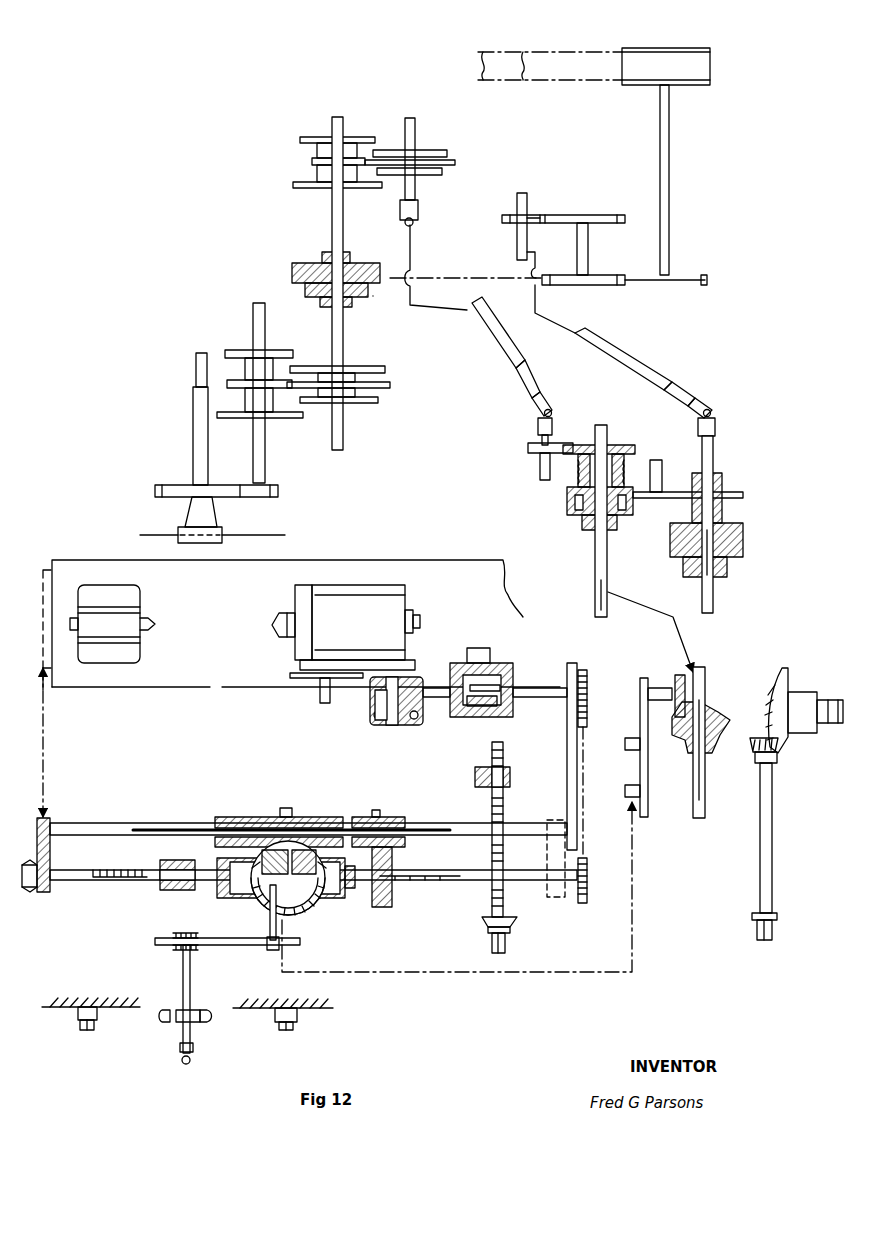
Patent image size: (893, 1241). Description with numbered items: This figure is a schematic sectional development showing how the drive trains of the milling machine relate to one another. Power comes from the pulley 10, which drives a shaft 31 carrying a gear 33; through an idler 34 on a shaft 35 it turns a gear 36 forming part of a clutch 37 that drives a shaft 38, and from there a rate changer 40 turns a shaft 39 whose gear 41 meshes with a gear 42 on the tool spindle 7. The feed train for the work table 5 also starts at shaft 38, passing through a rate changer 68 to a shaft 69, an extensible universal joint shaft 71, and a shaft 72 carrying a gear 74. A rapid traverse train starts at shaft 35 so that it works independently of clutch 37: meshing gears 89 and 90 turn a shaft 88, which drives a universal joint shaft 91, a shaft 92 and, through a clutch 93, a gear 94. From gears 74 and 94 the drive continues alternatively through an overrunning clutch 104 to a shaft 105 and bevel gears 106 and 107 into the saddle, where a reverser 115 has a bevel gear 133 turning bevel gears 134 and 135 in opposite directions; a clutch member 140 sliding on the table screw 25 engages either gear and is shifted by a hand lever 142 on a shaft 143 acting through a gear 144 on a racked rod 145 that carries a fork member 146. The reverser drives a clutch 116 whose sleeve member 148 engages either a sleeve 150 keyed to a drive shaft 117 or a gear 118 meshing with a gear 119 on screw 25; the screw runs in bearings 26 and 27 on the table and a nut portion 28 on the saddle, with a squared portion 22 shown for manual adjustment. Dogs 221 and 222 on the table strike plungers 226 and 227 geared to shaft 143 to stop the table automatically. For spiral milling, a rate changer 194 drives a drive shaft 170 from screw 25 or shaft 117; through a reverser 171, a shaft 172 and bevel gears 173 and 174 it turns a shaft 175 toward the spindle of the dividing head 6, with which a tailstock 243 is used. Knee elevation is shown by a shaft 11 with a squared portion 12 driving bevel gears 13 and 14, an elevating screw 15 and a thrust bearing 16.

The work table 5 is at (156, 683).
The dividing head 6 is at (372, 580).
The tool spindle 7 is at (193, 426).
The pulley 10 is at (645, 50).
The shaft 11 is at (492, 910).
The squared portion 12 is at (772, 918).
The bevel gear 13 is at (772, 765).
The bevel gear 14 is at (784, 668).
The elevating screw 15 is at (826, 700).
The thrust bearing 16 is at (805, 733).
The squared portion 22 is at (505, 940).
The table screw 25 is at (470, 880).
The bearing 26 is at (44, 893).
The bearing 27 is at (556, 897).
The nut portion 28 is at (185, 860).
The shaft 31 is at (669, 180).
The gear 33 is at (688, 285).
The idler 34 is at (605, 286).
The shaft 35 is at (589, 243).
The gear 36 is at (382, 290).
The clutch 37 is at (368, 295).
The shaft 38 is at (343, 343).
The shaft 39 is at (265, 312).
The rate changer 40 is at (302, 362).
The gear 41 is at (278, 492).
The gear 42 is at (228, 503).
The rate changer 68 is at (373, 190).
The shaft 69 is at (415, 185).
The extensible universal joint shaft 71 is at (508, 330).
The shaft 72 is at (552, 438).
The gear 74 is at (528, 446).
The shaft 88 is at (528, 194).
The gear 89 is at (574, 216).
The gear 90 is at (531, 216).
The extensible universal joint shaft 91 is at (650, 364).
The shaft 92 is at (714, 449).
The clutch 93 is at (755, 535).
The gear 94 is at (743, 494).
The overrunning clutch 104 is at (565, 505).
The shaft 105 is at (596, 552).
The bevel gear 106 is at (708, 702).
The bevel gear 107 is at (680, 676).
The reverser 115 is at (346, 893).
The clutch 116 is at (340, 815).
The drive shaft 117 is at (445, 828).
The gear 118 is at (380, 813).
The gear 119 is at (392, 858).
The bevel gear 133 is at (300, 915).
The bevel gear 134 is at (244, 893).
The bevel gear 135 is at (310, 900).
The clutch member 140 is at (262, 858).
The hand lever 142 is at (182, 1056).
The shaft 143 is at (190, 987).
The gear 144 is at (175, 948).
The rod 145 is at (246, 946).
The fork member 146 is at (270, 923).
The sleeve member 148 is at (303, 818).
The sleeve 150 is at (245, 816).
The drive shaft 170 is at (542, 688).
The reverser 171 is at (513, 675).
The shaft 172 is at (448, 688).
The bevel gear 173 is at (427, 688).
The bevel gear 174 is at (378, 715).
The shaft 175 is at (373, 695).
The rate changer 194 is at (590, 676).
The dog 221 is at (96, 1025).
The dog 222 is at (297, 1015).
The plunger 226 is at (168, 1018).
The plunger 227 is at (210, 1018).
The tailstock 243 is at (107, 583).